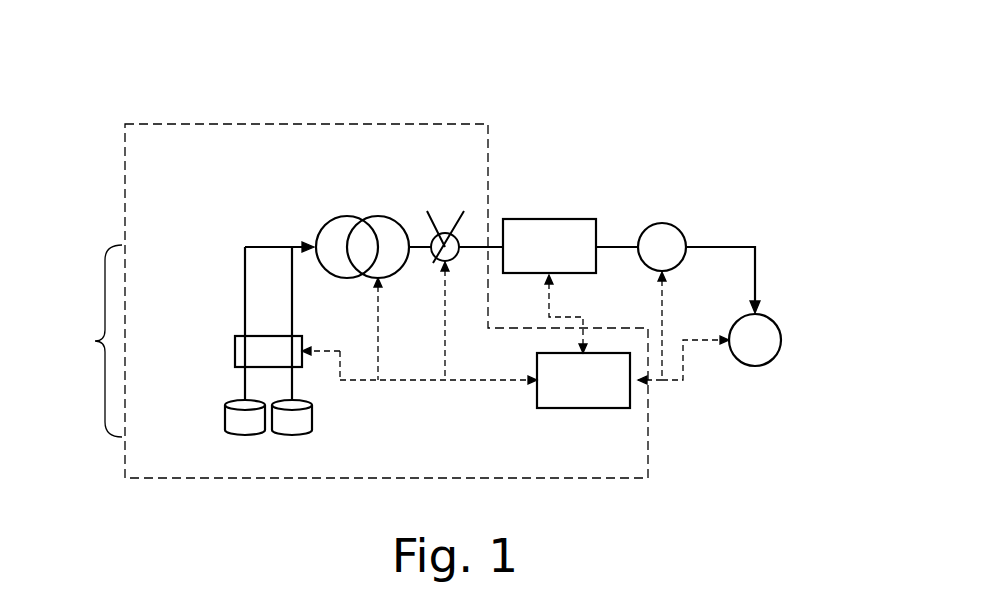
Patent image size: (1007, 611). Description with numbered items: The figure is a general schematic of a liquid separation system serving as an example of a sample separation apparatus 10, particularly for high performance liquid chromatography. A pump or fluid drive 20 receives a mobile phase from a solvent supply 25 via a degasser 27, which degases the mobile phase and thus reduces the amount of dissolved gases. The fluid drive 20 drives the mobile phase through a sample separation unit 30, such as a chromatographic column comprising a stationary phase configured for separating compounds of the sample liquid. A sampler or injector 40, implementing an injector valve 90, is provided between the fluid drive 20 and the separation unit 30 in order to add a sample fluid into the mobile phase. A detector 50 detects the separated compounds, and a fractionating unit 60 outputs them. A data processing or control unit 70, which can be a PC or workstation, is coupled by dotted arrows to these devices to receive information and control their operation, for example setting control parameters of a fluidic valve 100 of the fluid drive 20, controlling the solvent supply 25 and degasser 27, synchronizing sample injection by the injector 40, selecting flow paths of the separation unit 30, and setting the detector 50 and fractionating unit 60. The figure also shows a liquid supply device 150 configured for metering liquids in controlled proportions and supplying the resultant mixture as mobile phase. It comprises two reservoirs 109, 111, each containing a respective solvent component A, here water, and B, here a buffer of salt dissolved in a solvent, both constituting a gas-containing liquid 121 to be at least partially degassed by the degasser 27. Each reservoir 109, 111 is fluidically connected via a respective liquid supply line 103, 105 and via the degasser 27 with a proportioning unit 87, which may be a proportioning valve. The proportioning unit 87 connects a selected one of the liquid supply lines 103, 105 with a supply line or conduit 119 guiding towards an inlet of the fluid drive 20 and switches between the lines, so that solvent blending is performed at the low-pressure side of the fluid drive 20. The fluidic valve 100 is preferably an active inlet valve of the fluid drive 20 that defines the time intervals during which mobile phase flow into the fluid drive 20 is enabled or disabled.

The sample separation apparatus 10 is at (768, 223).
The fluid drive 20 is at (348, 216).
The solvent supply 25 is at (90, 341).
The degasser 27 is at (235, 352).
The sample separation unit 30 is at (547, 218).
The injector 40 is at (458, 233).
The detector 50 is at (659, 222).
The fractionating unit 60 is at (781, 340).
The control unit 70 is at (585, 408).
The proportioning unit 87 is at (292, 248).
The injector valve 90 is at (437, 259).
The fluidic valve 100 is at (330, 243).
The liquid supply line 103 is at (245, 322).
The liquid supply line 105 is at (293, 316).
The reservoir 109 is at (221, 472).
The reservoir 111 is at (323, 472).
The supply line 119 is at (280, 397).
The gas-containing liquid 121 is at (296, 247).
The liquid supply device 150 is at (125, 125).
The solvent component A is at (228, 424).
The solvent component B is at (303, 425).